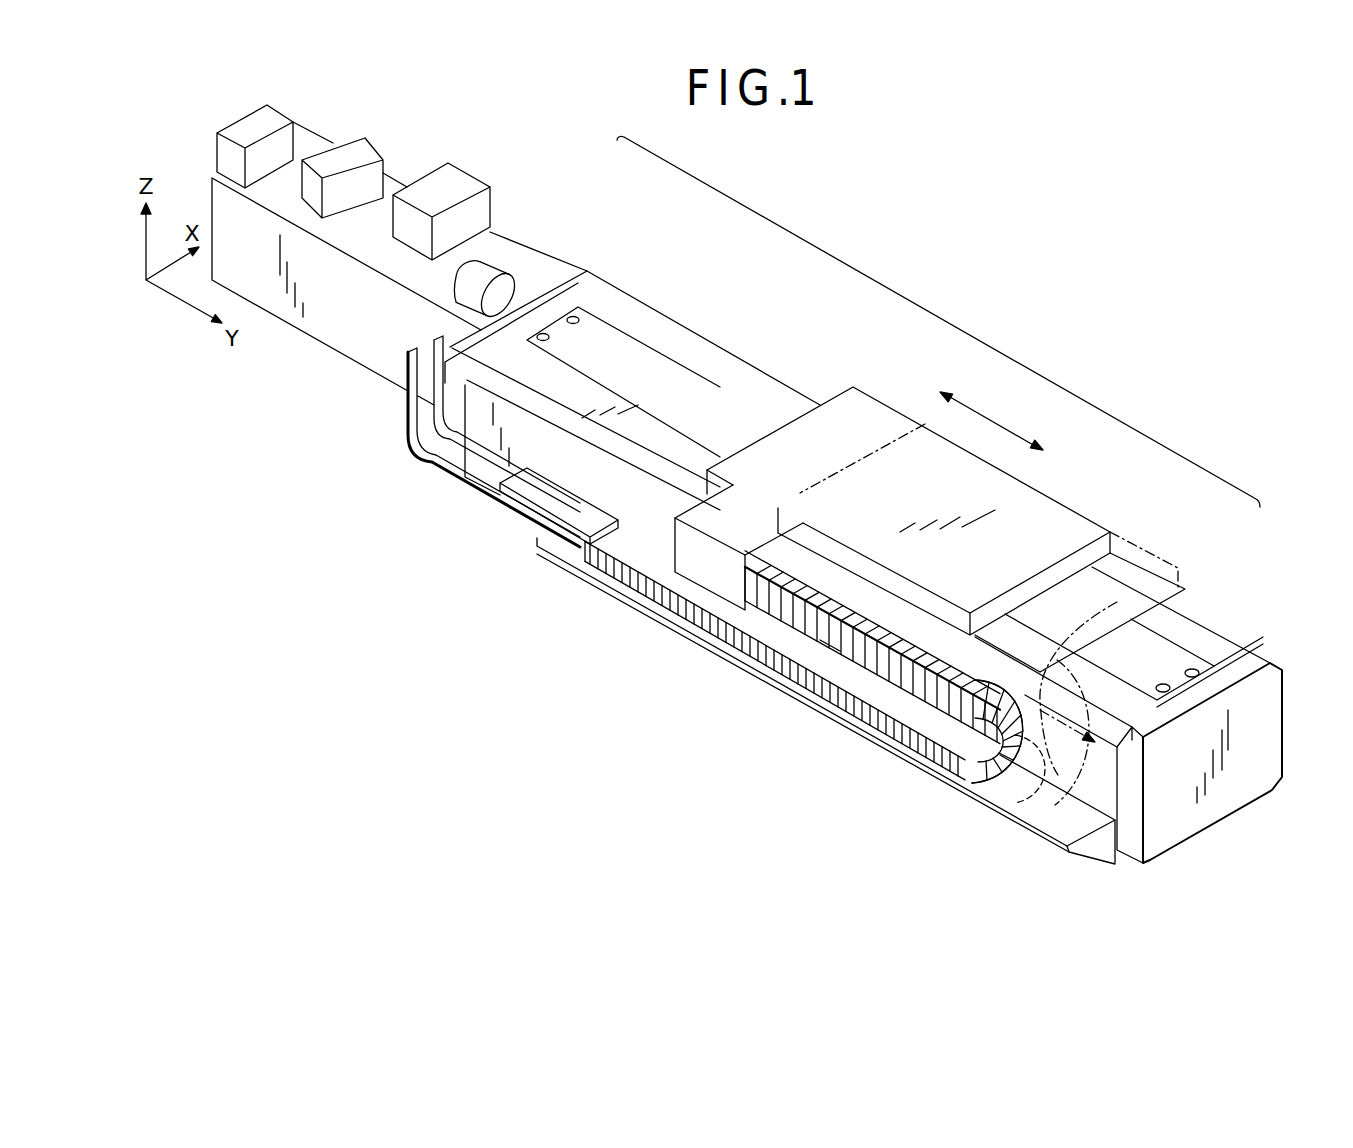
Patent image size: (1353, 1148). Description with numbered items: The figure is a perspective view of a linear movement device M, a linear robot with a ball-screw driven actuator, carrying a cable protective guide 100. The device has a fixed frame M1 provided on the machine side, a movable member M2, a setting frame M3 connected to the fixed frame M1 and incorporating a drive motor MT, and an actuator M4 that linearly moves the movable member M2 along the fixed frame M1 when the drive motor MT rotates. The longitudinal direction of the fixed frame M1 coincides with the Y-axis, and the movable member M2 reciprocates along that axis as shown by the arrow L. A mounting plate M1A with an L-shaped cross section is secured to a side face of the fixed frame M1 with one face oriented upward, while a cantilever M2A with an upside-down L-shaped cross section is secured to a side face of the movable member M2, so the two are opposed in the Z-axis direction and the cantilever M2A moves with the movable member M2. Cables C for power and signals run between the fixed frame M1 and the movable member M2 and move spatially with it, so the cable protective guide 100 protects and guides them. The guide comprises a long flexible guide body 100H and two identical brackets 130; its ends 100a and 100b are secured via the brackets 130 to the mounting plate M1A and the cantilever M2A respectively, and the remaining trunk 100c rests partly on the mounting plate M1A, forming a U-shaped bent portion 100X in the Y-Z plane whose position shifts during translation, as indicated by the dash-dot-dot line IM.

The linear movement device M is at (950, 326).
The fixed frame M1 is at (1160, 613).
The mounting plate M1A is at (1065, 823).
The movable member M2 is at (876, 412).
The cantilever M2A is at (545, 508).
The setting frame M3 is at (525, 263).
The actuator M4 is at (683, 385).
The drive motor MT is at (447, 290).
The dash-dot-dot line IM is at (1133, 647).
The cables C is at (411, 414).
The arrow L is at (993, 417).
The cable protective guide 100 is at (405, 612).
The guide body 100H is at (808, 818).
The end 100a is at (580, 547).
The end 100b is at (830, 640).
The trunk 100c is at (785, 630).
The U-shaped bent portion 100X is at (1008, 758).
The brackets 130 is at (700, 512).